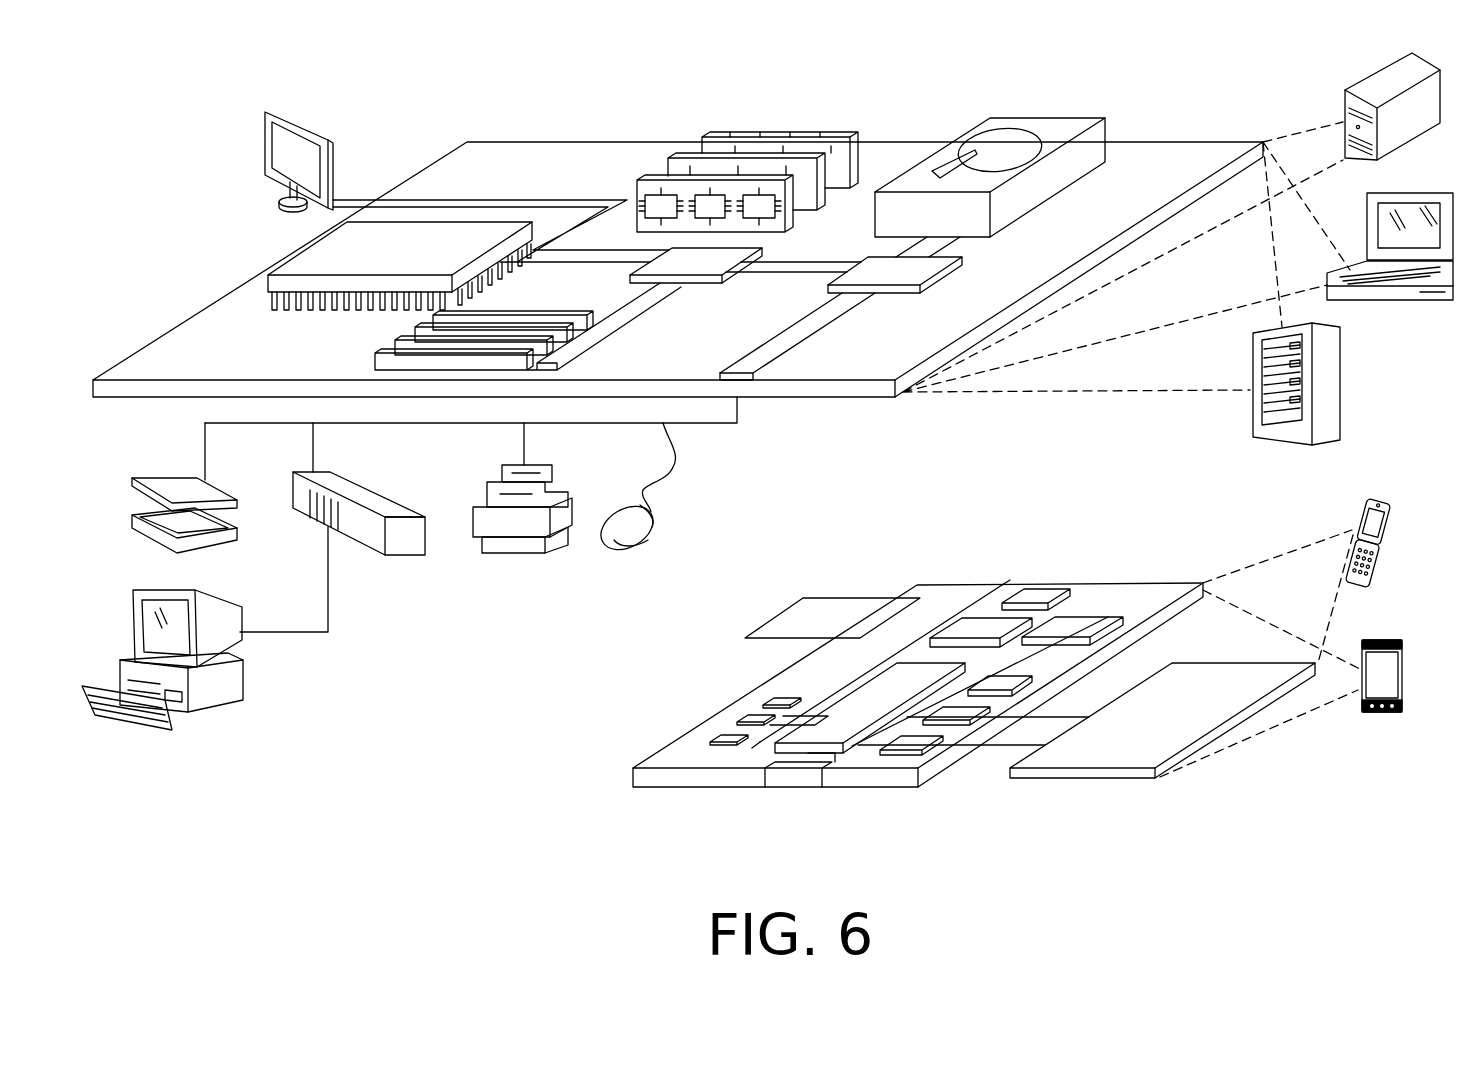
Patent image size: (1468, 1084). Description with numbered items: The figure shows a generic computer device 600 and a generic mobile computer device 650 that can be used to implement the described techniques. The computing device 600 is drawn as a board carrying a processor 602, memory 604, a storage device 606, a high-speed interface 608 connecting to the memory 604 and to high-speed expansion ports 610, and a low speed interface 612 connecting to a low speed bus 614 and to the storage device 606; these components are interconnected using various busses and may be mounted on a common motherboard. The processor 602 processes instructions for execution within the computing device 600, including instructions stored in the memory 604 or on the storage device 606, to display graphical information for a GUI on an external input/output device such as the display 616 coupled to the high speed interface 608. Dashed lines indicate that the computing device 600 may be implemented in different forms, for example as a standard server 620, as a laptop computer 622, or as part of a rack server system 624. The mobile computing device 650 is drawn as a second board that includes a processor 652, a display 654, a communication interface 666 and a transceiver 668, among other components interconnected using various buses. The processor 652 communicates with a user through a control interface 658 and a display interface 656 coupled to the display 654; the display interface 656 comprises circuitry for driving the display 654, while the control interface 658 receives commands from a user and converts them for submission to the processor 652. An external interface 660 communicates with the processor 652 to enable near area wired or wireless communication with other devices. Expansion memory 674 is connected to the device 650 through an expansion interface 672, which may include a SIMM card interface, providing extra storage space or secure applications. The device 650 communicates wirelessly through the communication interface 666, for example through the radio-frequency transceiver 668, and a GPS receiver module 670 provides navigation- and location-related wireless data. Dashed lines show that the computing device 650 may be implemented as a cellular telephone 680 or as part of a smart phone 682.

The computing device 600 is at (404, 80).
The processor 602 is at (297, 256).
The memory 604 is at (785, 136).
The storage device 606 is at (1036, 116).
The high-speed interface 608 is at (712, 262).
The high-speed expansion ports 610 is at (405, 334).
The low speed interface 612 is at (866, 265).
The low speed bus 614 is at (741, 370).
The display 616 is at (276, 107).
The standard server 620 is at (1368, 84).
The laptop computer 622 is at (1428, 192).
The rack server system 624 is at (1341, 383).
The mobile computer device 650 is at (1254, 784).
The processor 652 is at (793, 776).
The display 654 is at (1203, 681).
The display interface 656 is at (922, 745).
The control interface 658 is at (945, 712).
The external interface 660 is at (1004, 684).
The communication interface 666 is at (980, 622).
The transceiver 668 is at (1080, 622).
The GPS receiver module 670 is at (811, 598).
The expansion interface 672 is at (834, 720).
The expansion memory 674 is at (740, 720).
The cellular telephone 680 is at (1036, 594).
The smart phone 682 is at (900, 601).